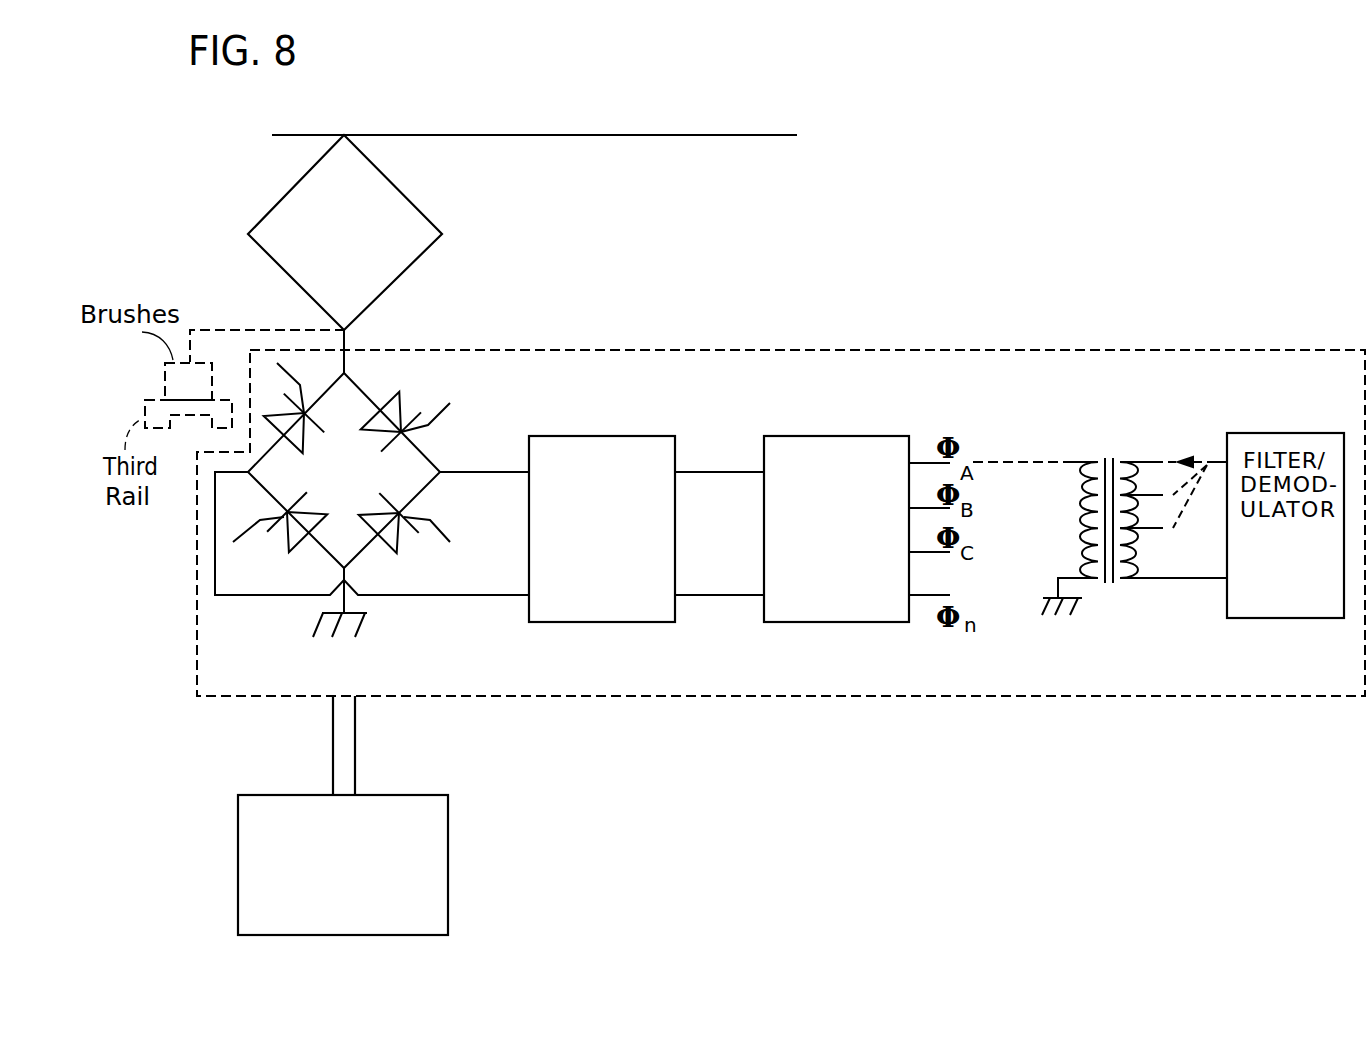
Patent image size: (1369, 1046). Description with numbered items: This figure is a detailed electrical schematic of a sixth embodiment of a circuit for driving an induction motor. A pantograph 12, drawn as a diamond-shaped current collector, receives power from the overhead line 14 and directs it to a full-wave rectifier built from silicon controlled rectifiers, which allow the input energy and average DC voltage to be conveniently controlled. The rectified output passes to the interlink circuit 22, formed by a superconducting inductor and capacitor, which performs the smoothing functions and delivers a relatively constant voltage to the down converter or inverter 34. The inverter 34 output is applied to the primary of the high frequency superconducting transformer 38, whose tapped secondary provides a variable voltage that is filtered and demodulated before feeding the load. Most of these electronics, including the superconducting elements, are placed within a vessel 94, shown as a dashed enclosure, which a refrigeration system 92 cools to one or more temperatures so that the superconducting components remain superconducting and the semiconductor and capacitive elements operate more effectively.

The pantograph 12 is at (301, 178).
The overhead line 14 is at (558, 132).
The interlink circuit 22 is at (572, 435).
The inverter 34 is at (793, 435).
The high frequency superconducting transformer 38 is at (1115, 453).
The refrigeration system 92 is at (448, 823).
The vessel 94 is at (708, 696).